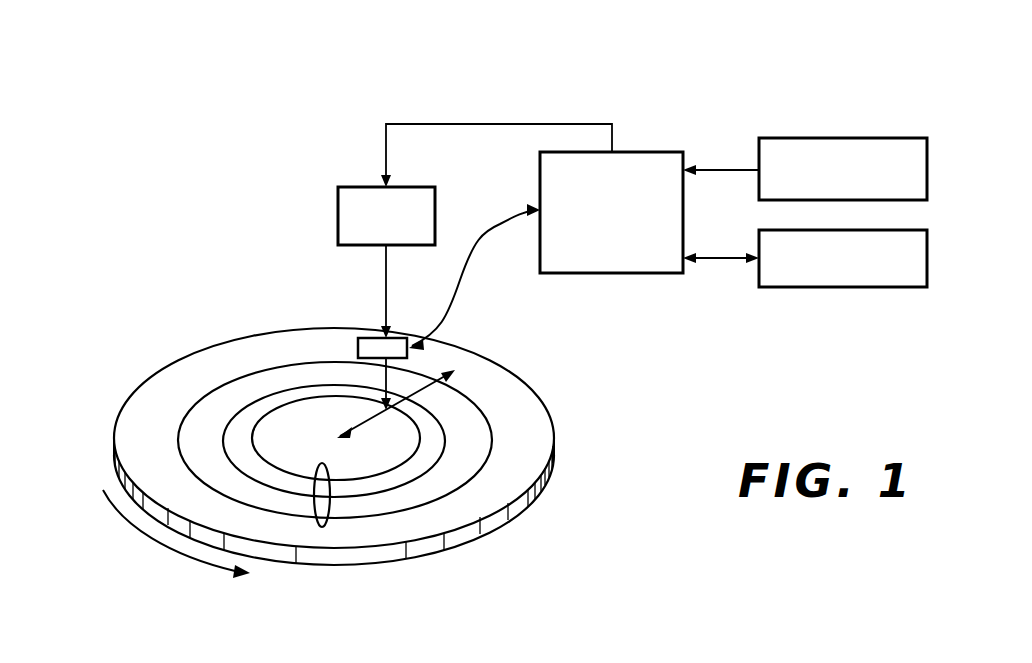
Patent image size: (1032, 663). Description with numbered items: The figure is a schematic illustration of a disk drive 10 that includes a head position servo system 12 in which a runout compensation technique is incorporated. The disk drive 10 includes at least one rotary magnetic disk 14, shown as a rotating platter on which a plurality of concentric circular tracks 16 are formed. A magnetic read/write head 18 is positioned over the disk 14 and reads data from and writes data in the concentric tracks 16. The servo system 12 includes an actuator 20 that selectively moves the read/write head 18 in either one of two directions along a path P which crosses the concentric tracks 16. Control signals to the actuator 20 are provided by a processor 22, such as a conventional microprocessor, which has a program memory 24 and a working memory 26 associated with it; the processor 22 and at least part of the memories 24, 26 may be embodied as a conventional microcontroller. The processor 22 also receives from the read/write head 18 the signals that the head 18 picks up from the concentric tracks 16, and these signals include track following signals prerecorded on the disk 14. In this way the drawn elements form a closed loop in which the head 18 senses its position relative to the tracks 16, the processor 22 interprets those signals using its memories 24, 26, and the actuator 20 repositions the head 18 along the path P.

The disk drive 10 is at (94, 270).
The servo system 12 is at (884, 52).
The rotary magnetic disk 14 is at (498, 530).
The concentric circular tracks 16 is at (323, 527).
The magnetic read/write head 18 is at (357, 346).
The actuator 20 is at (435, 213).
The processor 22 is at (642, 273).
The program memory 24 is at (927, 172).
The working memory 26 is at (927, 259).
The path P is at (415, 402).